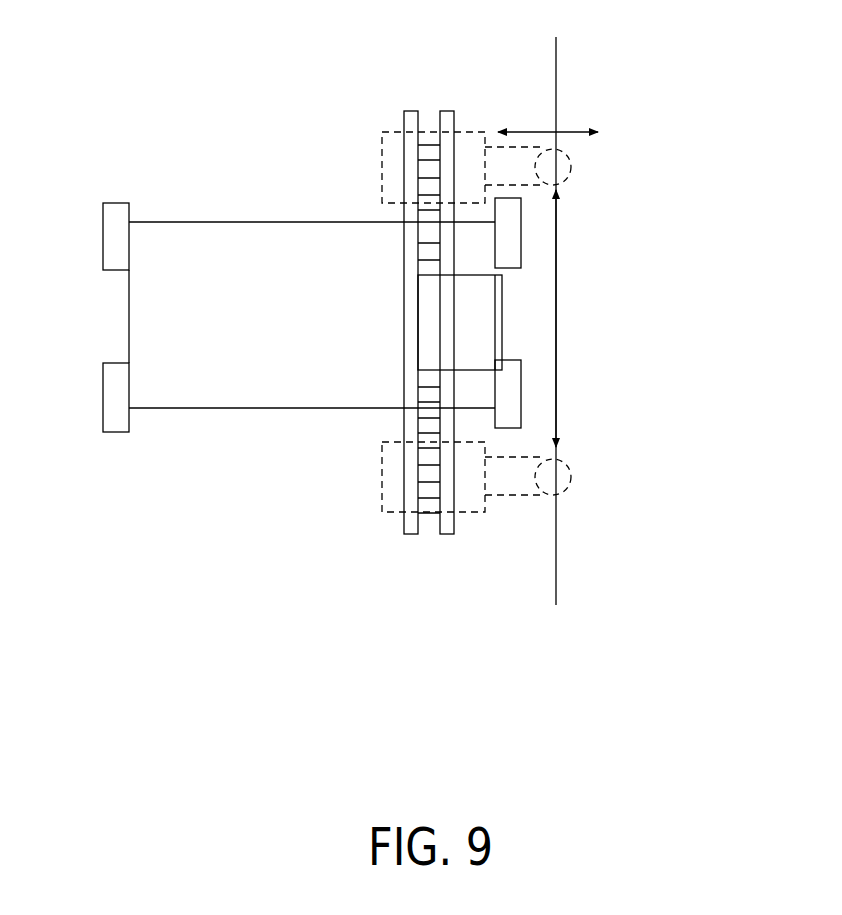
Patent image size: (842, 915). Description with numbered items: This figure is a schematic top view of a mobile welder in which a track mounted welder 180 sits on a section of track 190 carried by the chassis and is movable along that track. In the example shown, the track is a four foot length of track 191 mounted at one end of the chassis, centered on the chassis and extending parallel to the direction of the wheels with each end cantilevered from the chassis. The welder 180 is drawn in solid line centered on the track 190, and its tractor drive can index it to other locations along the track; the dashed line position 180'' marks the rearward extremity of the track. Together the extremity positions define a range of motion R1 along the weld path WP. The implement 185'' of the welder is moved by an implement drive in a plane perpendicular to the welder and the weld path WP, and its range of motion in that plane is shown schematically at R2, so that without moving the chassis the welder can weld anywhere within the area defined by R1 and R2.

The track 190 is at (400, 277).
The four foot length of track 191 is at (403, 370).
The welder 180 is at (461, 131).
The dashed line position 180'' is at (461, 524).
The implement 185'' is at (612, 346).
The weld path WP is at (556, 52).
The range of motion R1 is at (556, 320).
The range of motion R2 is at (570, 131).